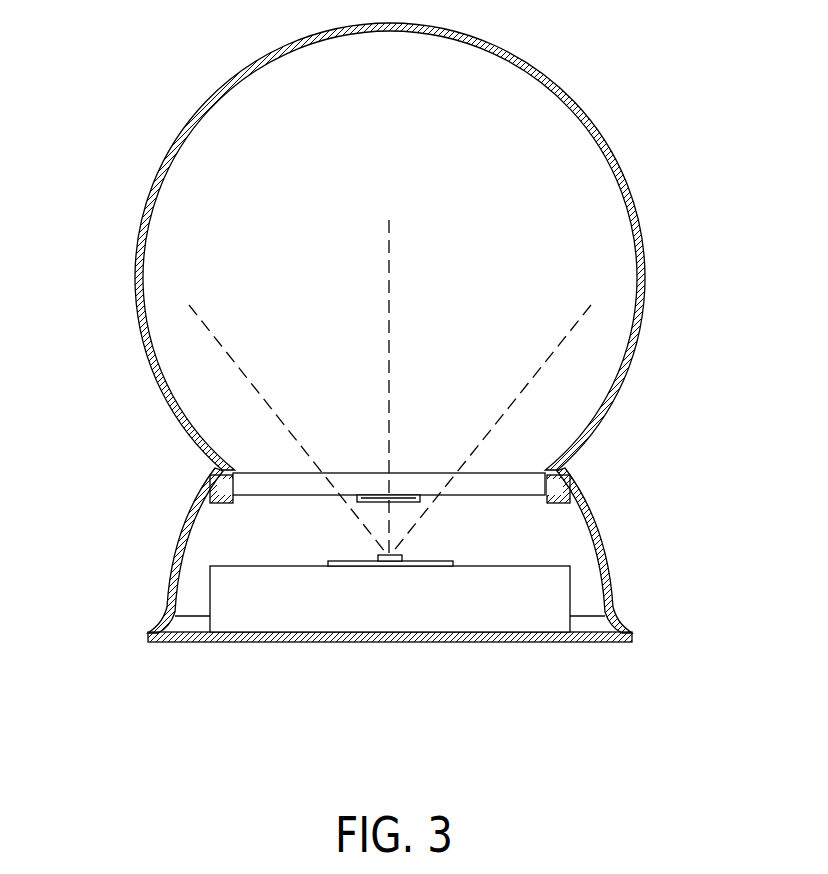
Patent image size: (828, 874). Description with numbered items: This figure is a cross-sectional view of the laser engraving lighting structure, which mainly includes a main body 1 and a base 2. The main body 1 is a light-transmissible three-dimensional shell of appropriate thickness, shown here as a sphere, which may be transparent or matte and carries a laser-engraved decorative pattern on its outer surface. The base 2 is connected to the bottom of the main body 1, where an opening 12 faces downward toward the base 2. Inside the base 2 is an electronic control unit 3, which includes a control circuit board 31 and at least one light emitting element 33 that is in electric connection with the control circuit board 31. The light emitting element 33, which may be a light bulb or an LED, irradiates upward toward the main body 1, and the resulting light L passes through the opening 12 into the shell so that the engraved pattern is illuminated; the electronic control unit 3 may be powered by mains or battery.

The main body 1 is at (603, 137).
The opening 12 is at (477, 487).
The base 2 is at (175, 540).
The electronic control unit 3 is at (452, 561).
The control circuit board 31 is at (355, 567).
The light emitting element 33 is at (380, 553).
The light L is at (205, 323).